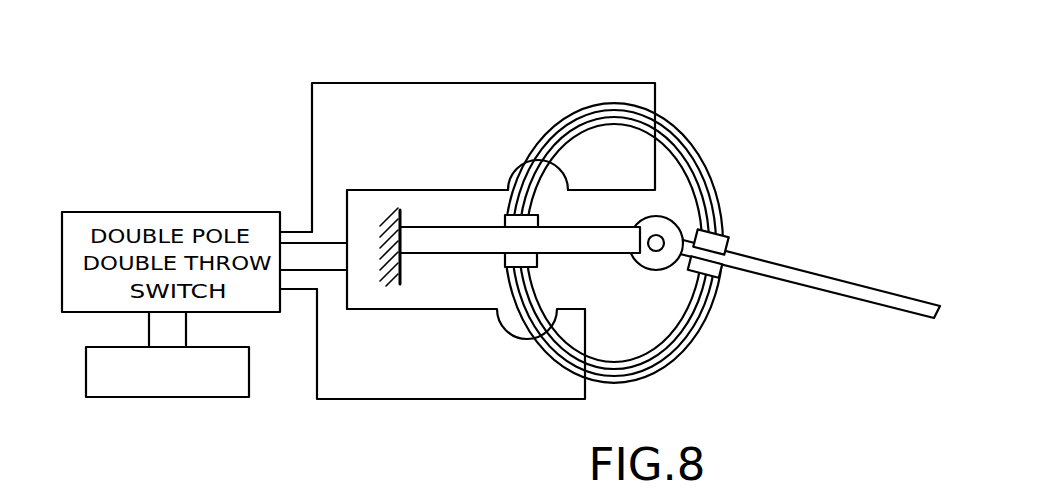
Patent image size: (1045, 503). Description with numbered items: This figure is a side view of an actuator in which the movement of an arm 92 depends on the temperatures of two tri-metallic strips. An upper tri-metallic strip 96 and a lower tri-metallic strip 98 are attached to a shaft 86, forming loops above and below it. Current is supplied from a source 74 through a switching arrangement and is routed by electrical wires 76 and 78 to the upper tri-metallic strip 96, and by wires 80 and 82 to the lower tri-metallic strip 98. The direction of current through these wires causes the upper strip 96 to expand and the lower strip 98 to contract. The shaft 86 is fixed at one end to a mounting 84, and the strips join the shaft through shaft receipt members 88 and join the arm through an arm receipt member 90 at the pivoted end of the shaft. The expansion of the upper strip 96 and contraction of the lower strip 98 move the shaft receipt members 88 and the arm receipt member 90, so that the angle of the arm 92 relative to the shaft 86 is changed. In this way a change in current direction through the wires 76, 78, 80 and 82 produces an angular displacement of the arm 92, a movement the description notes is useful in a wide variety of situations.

The battery 74 is at (137, 397).
The electrical wire 76 is at (455, 83).
The electrical wire 78 is at (360, 189).
The wire 80 is at (397, 309).
The wire 82 is at (398, 399).
The fixed mounting plate 84 is at (398, 217).
The shaft 86 is at (430, 243).
The shaft receipt members 88 is at (540, 222).
The arm receipt member 90 is at (732, 268).
The arm 92 is at (860, 293).
The upper tri-metallic strip 96 is at (678, 127).
The lower tri-metallic strip 98 is at (672, 343).